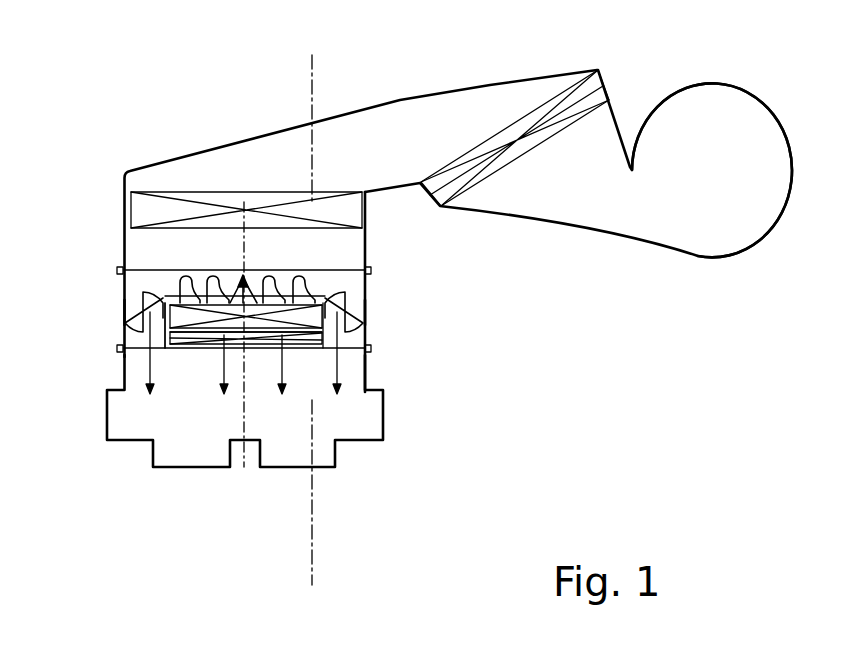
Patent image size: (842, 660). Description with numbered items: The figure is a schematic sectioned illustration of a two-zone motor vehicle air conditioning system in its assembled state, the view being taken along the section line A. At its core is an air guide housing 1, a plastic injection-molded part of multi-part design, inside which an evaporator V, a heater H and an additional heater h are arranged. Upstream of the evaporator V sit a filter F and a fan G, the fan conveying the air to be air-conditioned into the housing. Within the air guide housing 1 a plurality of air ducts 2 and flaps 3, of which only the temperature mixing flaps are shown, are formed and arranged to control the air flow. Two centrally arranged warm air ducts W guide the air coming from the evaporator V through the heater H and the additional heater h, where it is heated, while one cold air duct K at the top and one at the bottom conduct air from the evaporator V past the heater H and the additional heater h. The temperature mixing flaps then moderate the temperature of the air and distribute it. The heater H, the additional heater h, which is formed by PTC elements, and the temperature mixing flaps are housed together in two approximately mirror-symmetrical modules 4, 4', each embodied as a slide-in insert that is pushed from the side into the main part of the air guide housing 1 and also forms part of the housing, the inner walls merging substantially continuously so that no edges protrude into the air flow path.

The air guide housing 1 is at (366, 241).
The air ducts 2 is at (305, 403).
The flaps 3 is at (336, 306).
The module 4 is at (466, 313).
The module 4' is at (67, 338).
The evaporator V is at (263, 215).
The filter F is at (527, 127).
The fan G is at (707, 127).
The section line A- A is at (309, 324).
The heater H is at (182, 315).
The additional heater h is at (255, 335).
The cold air duct K is at (237, 353).
The warm air ducts W is at (240, 365).